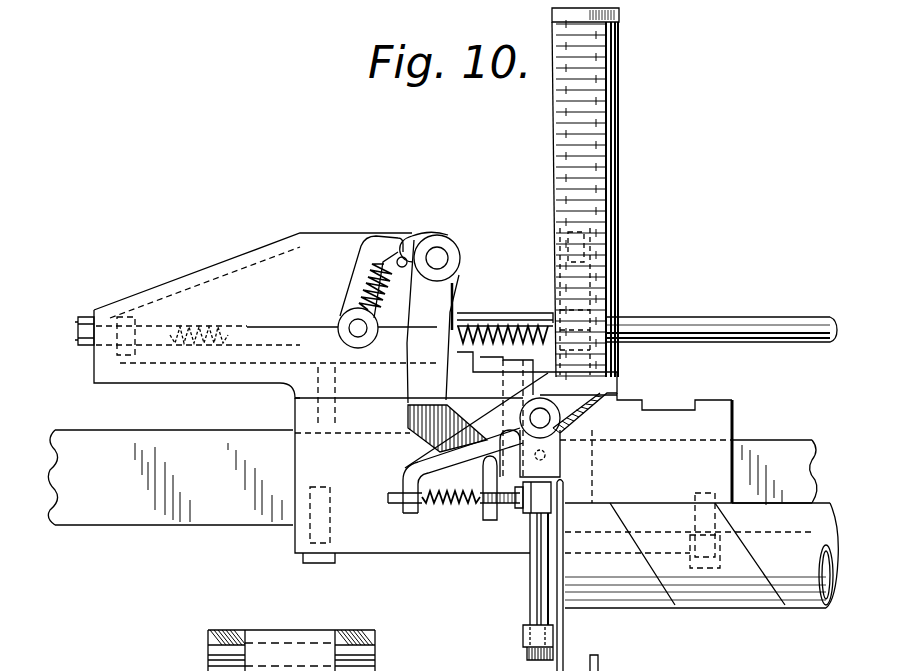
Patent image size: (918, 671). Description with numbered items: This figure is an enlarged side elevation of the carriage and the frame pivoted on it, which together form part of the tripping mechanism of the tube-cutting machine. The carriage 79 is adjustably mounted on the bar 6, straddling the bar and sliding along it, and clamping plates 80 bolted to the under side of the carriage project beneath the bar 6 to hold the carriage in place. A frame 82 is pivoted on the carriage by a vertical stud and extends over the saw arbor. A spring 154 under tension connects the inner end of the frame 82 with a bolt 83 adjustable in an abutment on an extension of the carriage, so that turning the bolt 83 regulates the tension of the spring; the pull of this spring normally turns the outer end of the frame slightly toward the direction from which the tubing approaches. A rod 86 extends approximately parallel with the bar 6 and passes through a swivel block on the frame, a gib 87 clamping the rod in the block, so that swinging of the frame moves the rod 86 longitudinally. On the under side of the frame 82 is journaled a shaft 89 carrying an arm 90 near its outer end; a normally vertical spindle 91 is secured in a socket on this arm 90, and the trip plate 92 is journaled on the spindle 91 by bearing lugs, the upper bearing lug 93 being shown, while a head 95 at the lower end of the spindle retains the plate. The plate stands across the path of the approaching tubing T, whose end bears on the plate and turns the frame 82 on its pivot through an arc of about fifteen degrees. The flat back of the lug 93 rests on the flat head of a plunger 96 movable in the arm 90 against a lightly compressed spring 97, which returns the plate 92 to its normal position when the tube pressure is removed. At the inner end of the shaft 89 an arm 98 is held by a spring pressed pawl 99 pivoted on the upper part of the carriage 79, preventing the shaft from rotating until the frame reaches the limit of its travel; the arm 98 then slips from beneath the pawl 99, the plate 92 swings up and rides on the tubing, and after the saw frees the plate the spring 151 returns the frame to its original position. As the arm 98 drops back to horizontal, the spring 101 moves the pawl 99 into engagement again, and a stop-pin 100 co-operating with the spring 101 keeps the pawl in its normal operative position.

The bar 6 is at (432, 477).
The carriage 79 is at (295, 410).
The clamping plates 80 is at (295, 535).
The frame 82 is at (610, 187).
The bolt 83 is at (78, 332).
The rod 86 is at (777, 303).
The gib 87 is at (612, 308).
The shaft 89 is at (565, 427).
The arm 90 is at (407, 517).
The spindle 91 is at (537, 593).
The trip plate 92 is at (566, 632).
The upper bearing lug 93 is at (537, 520).
The head 95 is at (524, 651).
The plunger 96 is at (522, 510).
The spring 97 is at (447, 507).
The arm 98 is at (432, 442).
The pawl 99 is at (420, 393).
The stop-pin 100 is at (413, 252).
The spring 101 is at (358, 283).
The spring 151 is at (535, 300).
The spring 154 is at (203, 328).
The tube T is at (760, 607).